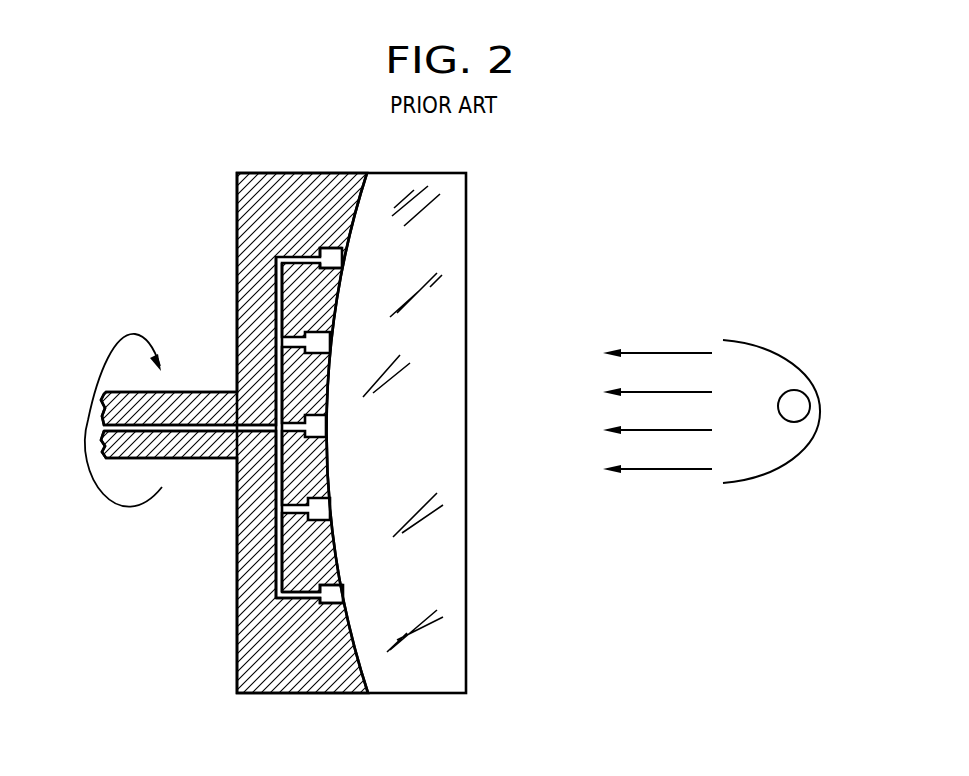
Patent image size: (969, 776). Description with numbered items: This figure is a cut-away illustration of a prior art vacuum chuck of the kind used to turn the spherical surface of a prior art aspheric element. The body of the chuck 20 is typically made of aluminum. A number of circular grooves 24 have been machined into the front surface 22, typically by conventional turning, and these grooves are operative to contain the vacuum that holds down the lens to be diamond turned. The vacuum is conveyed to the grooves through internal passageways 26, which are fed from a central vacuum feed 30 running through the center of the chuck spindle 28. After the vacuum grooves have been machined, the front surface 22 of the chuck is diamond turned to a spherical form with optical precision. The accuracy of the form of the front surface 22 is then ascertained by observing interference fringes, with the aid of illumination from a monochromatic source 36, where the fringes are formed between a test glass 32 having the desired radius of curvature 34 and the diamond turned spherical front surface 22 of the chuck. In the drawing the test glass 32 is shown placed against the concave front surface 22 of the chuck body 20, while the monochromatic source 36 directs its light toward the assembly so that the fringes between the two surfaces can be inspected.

The body of the chuck 20 is at (268, 199).
The front surface 22 is at (333, 553).
The circular grooves 24 is at (338, 261).
The internal passageways 26 is at (274, 306).
The chuck spindle 28 is at (198, 457).
The central vacuum feed 30 is at (101, 428).
The test glass 32 is at (418, 472).
The desired radius of curvature 34 is at (333, 508).
The monochromatic source 36 is at (762, 342).